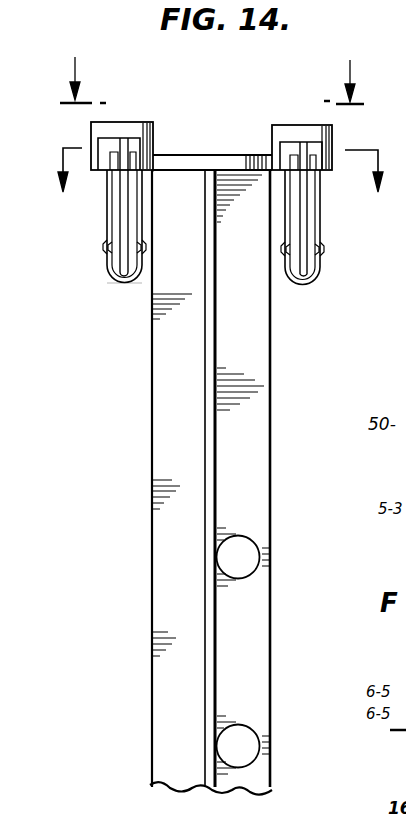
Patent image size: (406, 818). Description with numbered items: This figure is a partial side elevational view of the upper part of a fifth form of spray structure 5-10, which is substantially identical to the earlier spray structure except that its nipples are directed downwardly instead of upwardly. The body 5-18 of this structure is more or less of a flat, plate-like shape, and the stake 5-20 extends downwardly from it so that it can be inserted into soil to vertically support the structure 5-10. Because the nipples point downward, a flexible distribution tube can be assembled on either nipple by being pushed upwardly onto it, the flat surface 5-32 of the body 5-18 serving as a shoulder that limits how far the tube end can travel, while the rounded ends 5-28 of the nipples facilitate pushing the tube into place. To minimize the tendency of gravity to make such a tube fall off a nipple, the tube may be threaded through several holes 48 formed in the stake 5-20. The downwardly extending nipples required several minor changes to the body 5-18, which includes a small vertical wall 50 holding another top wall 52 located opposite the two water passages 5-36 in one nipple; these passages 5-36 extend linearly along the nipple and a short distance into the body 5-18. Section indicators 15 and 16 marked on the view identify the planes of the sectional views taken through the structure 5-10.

The section line 15- 15 is at (217, 68).
The section line 16- 16 is at (222, 188).
The holes 48 is at (243, 536).
The vertical wall 50 is at (112, 146).
The top wall 52 is at (131, 124).
The spray structure 5-10 is at (126, 316).
The body 5-18 is at (247, 148).
The stake 5-20 is at (320, 224).
The rounded upper ends 5-28 is at (108, 228).
The flat upper surface 5-32 is at (146, 172).
The water passages 5-36 is at (122, 262).